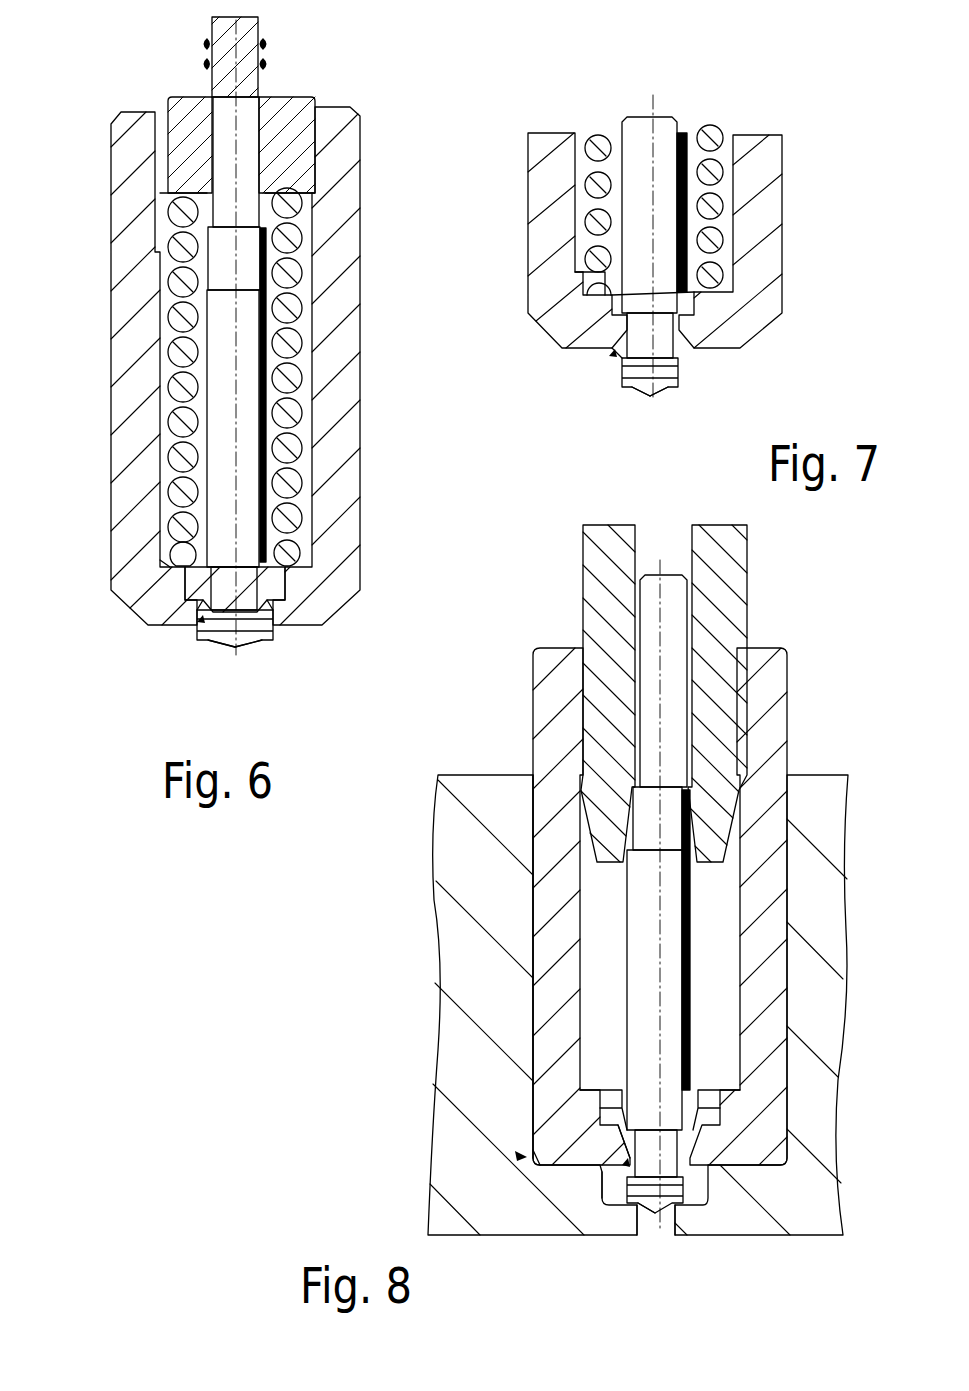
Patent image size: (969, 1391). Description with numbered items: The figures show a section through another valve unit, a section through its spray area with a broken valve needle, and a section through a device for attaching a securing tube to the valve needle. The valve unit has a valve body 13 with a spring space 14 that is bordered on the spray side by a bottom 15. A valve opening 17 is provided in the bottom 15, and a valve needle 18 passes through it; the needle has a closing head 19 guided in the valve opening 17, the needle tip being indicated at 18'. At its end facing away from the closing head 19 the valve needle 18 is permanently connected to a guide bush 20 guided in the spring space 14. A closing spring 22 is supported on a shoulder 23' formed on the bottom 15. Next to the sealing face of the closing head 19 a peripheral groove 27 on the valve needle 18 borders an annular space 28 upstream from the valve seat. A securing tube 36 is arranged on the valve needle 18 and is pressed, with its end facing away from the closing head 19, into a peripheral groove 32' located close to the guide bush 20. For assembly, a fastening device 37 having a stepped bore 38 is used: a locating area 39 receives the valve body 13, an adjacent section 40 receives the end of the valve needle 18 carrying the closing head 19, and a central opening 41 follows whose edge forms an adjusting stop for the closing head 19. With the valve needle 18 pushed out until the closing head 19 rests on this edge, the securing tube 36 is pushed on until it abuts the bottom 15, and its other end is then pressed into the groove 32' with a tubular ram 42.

In FIG. 6, the valve body 13 is at (138, 325).
In FIG. 7, the valve body 13 is at (750, 233).
In FIG. 8, the valve body 13 is at (557, 748).
In FIG. 6, the spring space 14 is at (302, 425).
In FIG. 7, the spring space 14 is at (723, 190).
In FIG. 6, the bottom 15 is at (167, 603).
In FIG. 7, the bottom 15 is at (717, 322).
In FIG. 8, the bottom 15 is at (732, 1120).
In FIG. 6, the valve opening 17 is at (199, 623).
In FIG. 7, the valve opening 17 is at (610, 355).
In FIG. 8, the valve opening 17 is at (706, 1165).
In FIG. 6, the valve needle 18 is at (324, 353).
In FIG. 7, the valve needle 18 is at (685, 182).
In FIG. 8, the valve needle 18 is at (738, 876).
In FIG. 6, the needle tip 18' is at (292, 626).
In FIG. 7, the needle tip 18' is at (696, 388).
In FIG. 6, the closing head 19 is at (247, 641).
In FIG. 7, the closing head 19 is at (660, 394).
In FIG. 8, the closing head 19 is at (641, 1212).
In FIG. 6, the guide bush 20 is at (290, 122).
In FIG. 6, the closing spring 22 is at (302, 370).
In FIG. 7, the closing spring 22 is at (590, 137).
In FIG. 6, the shoulder 23' is at (100, 575).
In FIG. 6, the peripheral groove 27 is at (216, 640).
In FIG. 7, the peripheral groove 27 is at (632, 388).
In FIG. 8, the peripheral groove 27 is at (668, 1188).
In FIG. 6, the annular space 28 is at (270, 628).
In FIG. 6, the peripheral groove 32' is at (329, 249).
In FIG. 8, the peripheral groove 32' is at (757, 783).
In FIG. 6, the securing tube 36 is at (270, 322).
In FIG. 7, the securing tube 36 is at (710, 163).
In FIG. 8, the securing tube 36 is at (688, 987).
In FIG. 8, the fastening device 37 is at (478, 992).
In FIG. 8, the stepped bore 38 is at (522, 1157).
In FIG. 8, the locating area 39 is at (535, 915).
In FIG. 8, the section 40 is at (607, 1178).
In FIG. 8, the central opening 41 is at (660, 1222).
In FIG. 8, the tubular ram 42 is at (615, 585).